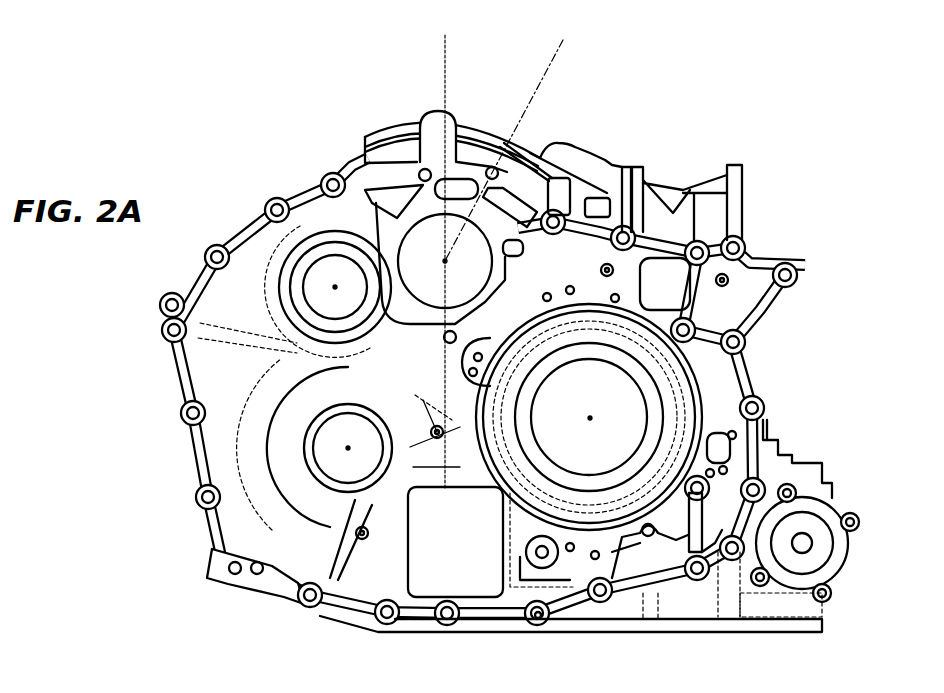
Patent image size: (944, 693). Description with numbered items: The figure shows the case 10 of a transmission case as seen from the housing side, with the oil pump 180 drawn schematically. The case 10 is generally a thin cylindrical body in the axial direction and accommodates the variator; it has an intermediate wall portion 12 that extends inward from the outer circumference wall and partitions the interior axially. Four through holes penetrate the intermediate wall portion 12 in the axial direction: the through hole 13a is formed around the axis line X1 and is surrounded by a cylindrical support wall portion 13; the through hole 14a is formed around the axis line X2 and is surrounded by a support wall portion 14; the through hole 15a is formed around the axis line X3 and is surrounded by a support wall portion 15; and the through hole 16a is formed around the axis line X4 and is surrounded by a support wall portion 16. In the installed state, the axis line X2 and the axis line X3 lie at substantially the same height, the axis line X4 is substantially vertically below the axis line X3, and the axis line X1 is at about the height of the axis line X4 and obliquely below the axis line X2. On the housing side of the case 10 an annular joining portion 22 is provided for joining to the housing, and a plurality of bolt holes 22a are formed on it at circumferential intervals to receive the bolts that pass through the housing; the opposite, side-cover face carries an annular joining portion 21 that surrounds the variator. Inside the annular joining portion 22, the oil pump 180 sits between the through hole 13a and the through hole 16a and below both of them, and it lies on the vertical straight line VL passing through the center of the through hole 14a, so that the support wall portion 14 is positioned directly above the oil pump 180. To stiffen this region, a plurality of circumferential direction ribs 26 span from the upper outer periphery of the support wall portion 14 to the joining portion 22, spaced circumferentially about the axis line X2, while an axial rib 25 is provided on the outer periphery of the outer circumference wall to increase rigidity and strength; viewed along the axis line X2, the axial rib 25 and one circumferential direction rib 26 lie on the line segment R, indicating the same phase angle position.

The case 10 is at (797, 173).
The intermediate wall portion 12 is at (360, 580).
The support wall portion 13 is at (567, 360).
The through hole 13a is at (610, 468).
The support wall portion 14 is at (440, 263).
The through hole 14a is at (457, 298).
The support wall portion 15 is at (280, 245).
The through hole 15a is at (300, 302).
The support wall portion 16 is at (318, 452).
The through hole 16a is at (342, 420).
The joining portion 21 is at (385, 143).
The joining portion 22 is at (185, 385).
The bolt holes 22a is at (412, 140).
The axial rib 25 is at (533, 140).
The circumferential direction ribs 26 is at (350, 213).
The oil pump 180 is at (478, 556).
The straight line VL is at (446, 247).
The line segment R is at (511, 133).
The axis line X1 is at (592, 418).
The axis line X2 is at (448, 261).
The axis line X3 is at (333, 287).
The axis line X4 is at (350, 478).